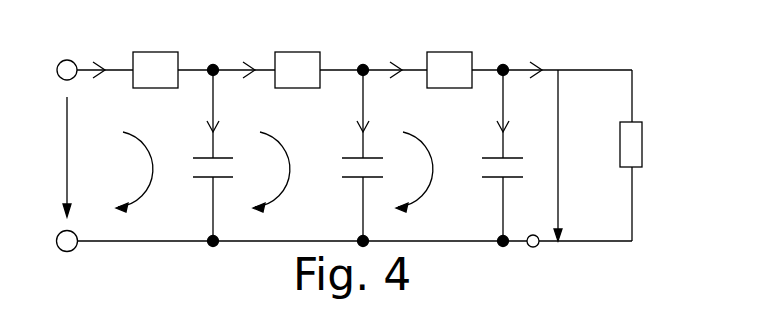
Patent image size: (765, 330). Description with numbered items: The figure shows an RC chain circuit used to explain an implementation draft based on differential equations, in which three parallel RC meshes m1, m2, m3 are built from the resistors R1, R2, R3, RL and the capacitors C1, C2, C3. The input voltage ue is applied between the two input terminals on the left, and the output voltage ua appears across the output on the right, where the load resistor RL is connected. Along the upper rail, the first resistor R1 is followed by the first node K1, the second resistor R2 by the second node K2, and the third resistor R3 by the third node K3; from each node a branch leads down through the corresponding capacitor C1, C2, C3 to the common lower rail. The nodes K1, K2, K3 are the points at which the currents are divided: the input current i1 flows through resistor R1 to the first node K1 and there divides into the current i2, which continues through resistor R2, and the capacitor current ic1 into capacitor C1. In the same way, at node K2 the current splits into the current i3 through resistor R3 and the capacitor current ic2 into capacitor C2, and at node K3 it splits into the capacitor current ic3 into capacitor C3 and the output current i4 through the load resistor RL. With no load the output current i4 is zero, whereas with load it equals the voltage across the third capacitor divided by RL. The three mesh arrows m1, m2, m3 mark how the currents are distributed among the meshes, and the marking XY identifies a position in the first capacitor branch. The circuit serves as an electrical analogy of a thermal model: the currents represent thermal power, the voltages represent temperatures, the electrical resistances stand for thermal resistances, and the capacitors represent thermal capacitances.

The resistor R1 is at (155, 57).
The resistor R2 is at (297, 57).
The resistor R3 is at (449, 57).
The load resistor RL is at (641, 144).
The capacitor C1 is at (219, 186).
The capacitor C2 is at (365, 186).
The capacitor C3 is at (505, 186).
The first node K1 is at (210, 59).
The second node K2 is at (360, 59).
The third node K3 is at (500, 59).
The current i1 is at (95, 58).
The current i2 is at (249, 58).
The current i3 is at (396, 58).
The current i4 is at (536, 58).
The capacitor current ic1 is at (222, 103).
The capacitor current ic2 is at (372, 103).
The capacitor current ic3 is at (512, 103).
The input voltage ue is at (73, 157).
The output voltage ua is at (566, 155).
The first RC mesh m1 is at (134, 172).
The second RC mesh m2 is at (271, 172).
The third RC mesh m3 is at (414, 172).
The cut location XY is at (189, 127).